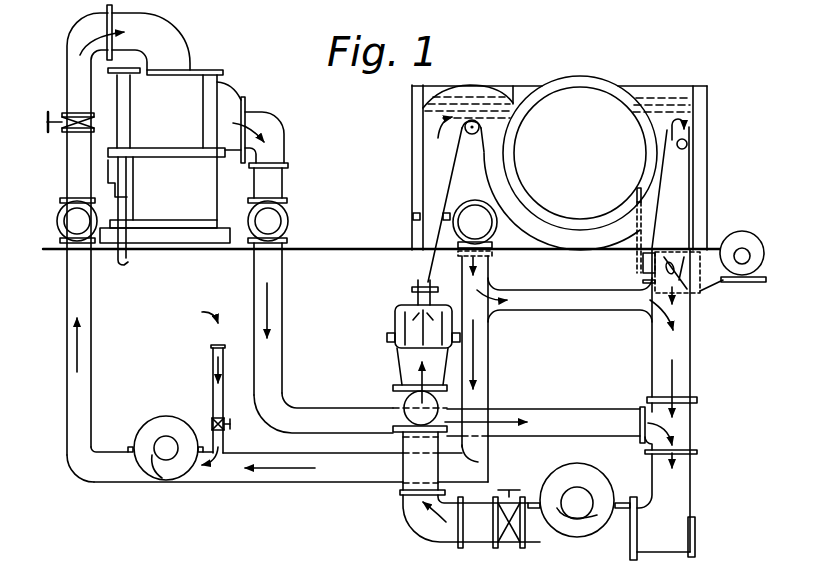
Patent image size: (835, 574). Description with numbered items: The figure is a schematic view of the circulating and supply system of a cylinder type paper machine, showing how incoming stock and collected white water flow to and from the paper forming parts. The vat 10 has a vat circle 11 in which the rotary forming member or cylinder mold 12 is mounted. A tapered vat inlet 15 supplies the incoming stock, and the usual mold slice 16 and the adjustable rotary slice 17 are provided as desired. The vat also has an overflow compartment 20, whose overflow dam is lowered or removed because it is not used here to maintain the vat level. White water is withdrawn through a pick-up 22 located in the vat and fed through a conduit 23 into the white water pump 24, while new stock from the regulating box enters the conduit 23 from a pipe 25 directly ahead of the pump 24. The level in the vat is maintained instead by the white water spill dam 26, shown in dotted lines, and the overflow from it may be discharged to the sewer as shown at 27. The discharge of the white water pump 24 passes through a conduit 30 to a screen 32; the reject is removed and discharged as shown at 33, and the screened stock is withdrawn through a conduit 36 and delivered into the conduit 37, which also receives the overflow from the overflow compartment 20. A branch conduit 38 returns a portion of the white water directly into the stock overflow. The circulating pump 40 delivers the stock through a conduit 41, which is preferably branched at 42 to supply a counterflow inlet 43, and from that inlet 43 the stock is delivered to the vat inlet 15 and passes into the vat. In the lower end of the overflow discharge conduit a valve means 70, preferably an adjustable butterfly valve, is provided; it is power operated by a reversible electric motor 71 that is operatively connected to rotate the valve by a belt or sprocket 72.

The vat 10 is at (412, 110).
The vat circle 11 is at (520, 233).
The cylinder mold 12 is at (615, 100).
The tapered vat inlet 15 is at (432, 155).
The mold slice 16 is at (512, 84).
The adjustable rotary slice 17 is at (479, 128).
The overflow compartment 20 is at (683, 163).
The pick-up 22 is at (453, 222).
The conduit 23 is at (482, 355).
The white water pump 24 is at (165, 398).
The pipe 25 is at (212, 352).
The white water spill dam 26 is at (637, 193).
The sewer discharge 27 is at (643, 262).
The conduit 30 is at (70, 297).
The screen 32 is at (195, 72).
The reject outlet 33 is at (131, 259).
The conduit 36 is at (277, 155).
The conduit 37 is at (682, 352).
The branch conduit 38 is at (563, 302).
The circulating pump 40 is at (592, 477).
The conduit 41 is at (405, 508).
The branch 42 is at (402, 365).
The counterflow inlet 43 is at (395, 315).
The valve means 70 is at (689, 295).
The reversible electric motor 71 is at (745, 238).
The belt or sprocket 72 is at (717, 247).